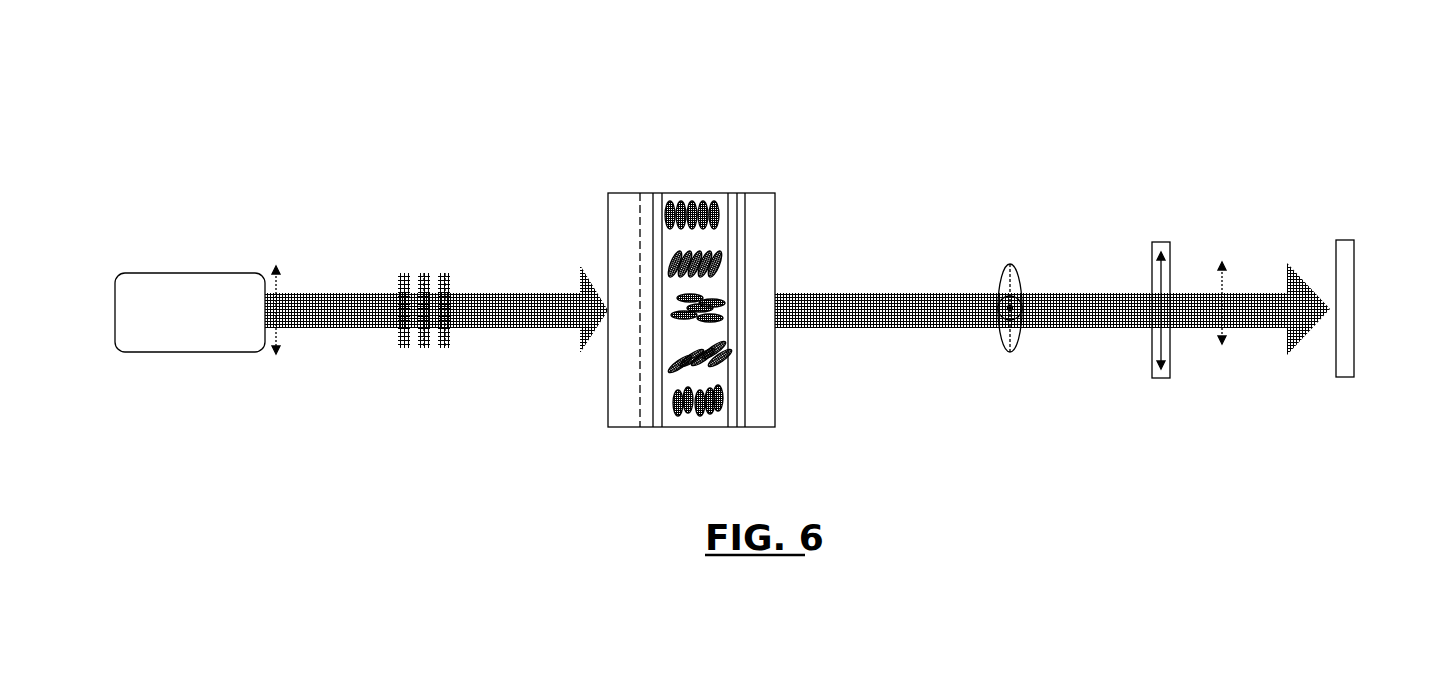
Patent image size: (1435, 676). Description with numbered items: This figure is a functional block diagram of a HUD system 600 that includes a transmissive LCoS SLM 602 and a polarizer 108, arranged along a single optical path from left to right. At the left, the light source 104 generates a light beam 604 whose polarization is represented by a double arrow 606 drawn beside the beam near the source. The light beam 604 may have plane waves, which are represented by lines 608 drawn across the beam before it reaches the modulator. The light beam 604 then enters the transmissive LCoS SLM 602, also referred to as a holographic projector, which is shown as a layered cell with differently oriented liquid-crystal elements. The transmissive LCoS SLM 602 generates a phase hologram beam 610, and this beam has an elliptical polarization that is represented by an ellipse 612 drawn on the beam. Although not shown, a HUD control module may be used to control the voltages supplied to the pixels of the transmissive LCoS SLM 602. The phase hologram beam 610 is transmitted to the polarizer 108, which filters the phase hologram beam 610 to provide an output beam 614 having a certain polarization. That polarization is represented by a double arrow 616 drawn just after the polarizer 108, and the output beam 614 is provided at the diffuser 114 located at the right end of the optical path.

The HUD system 600 is at (310, 88).
The light source 104 is at (192, 275).
The light beam 604 is at (340, 328).
The double arrow 606 is at (280, 277).
The lines 608 is at (445, 277).
The transmissive LCoS SLM 602 is at (608, 192).
The phase hologram beam 610 is at (850, 298).
The ellipse 612 is at (1018, 277).
The polarizer 108 is at (1170, 378).
The double arrow 616 is at (1220, 262).
The output beam 614 is at (1257, 293).
The diffuser 114 is at (1352, 253).